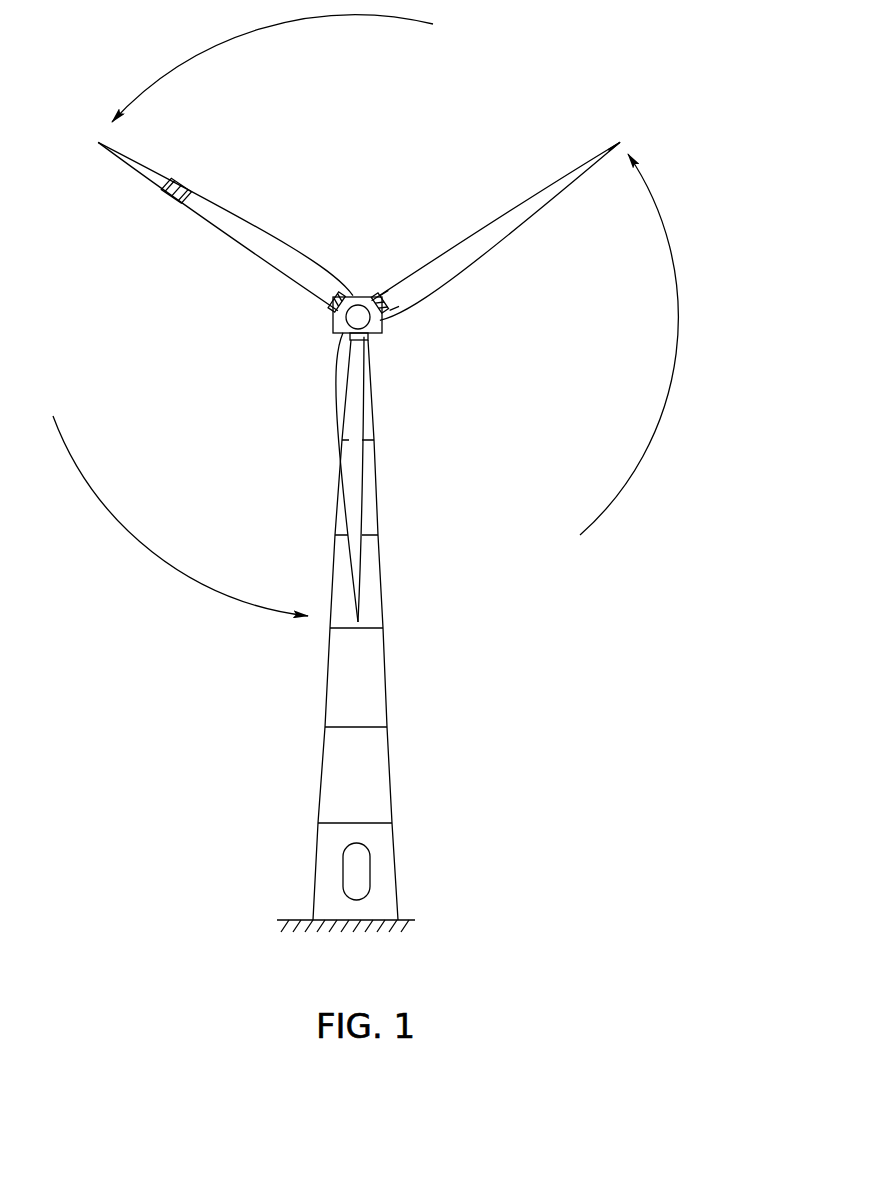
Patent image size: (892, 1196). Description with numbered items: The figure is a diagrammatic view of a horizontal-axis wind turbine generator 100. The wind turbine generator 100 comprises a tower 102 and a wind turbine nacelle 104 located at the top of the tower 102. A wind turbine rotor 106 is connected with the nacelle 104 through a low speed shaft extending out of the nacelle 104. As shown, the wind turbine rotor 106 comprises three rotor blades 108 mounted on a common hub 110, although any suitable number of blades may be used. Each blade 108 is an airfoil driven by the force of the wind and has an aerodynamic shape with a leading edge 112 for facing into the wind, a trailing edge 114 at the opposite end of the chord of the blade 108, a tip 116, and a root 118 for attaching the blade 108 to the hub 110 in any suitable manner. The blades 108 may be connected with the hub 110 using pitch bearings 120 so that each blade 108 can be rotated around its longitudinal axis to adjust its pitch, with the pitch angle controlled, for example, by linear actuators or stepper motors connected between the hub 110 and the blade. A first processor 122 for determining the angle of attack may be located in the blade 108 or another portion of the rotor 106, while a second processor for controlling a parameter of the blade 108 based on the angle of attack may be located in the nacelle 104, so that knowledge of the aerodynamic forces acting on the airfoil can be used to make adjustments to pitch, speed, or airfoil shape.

The wind turbine generator 100 is at (415, 473).
The tower 102 is at (380, 690).
The wind turbine nacelle 104 is at (382, 339).
The wind turbine rotor 106 is at (422, 320).
The rotor blade 108 is at (422, 320).
The hub 110 is at (360, 310).
The leading edge 112 is at (525, 203).
The trailing edge 114 is at (513, 223).
The tip 116 is at (627, 136).
The root 118 is at (398, 314).
The pitch bearing 120 is at (380, 303).
The first processor 122 is at (158, 181).